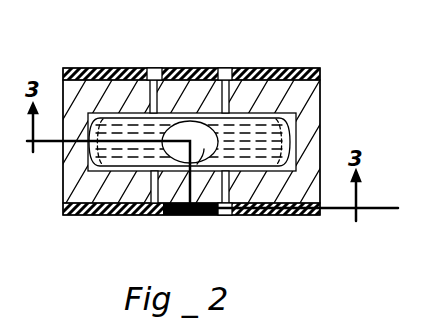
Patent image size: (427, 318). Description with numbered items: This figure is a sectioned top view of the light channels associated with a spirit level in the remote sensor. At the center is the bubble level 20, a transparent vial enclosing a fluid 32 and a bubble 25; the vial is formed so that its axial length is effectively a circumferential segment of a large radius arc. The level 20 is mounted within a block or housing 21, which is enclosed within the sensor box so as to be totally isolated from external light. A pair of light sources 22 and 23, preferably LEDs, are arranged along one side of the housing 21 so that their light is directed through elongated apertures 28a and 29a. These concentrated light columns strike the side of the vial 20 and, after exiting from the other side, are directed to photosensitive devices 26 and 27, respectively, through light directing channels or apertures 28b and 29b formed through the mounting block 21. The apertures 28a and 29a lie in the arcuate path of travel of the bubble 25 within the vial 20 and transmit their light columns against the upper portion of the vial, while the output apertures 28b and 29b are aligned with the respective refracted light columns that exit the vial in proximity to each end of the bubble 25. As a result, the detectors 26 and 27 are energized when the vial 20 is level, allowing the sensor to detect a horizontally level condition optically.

The bubble level 20 is at (320, 90).
The housing 21 is at (305, 142).
The light source 22 is at (153, 216).
The light source 23 is at (229, 216).
The bubble 25 is at (201, 213).
The photosensitive device 26 is at (153, 68).
The photosensitive device 27 is at (225, 68).
The elongated aperture 28a is at (148, 189).
The light directing channel 28b is at (148, 100).
The elongated aperture 29a is at (230, 188).
The light directing channel 29b is at (230, 96).
The fluid 32 is at (270, 131).